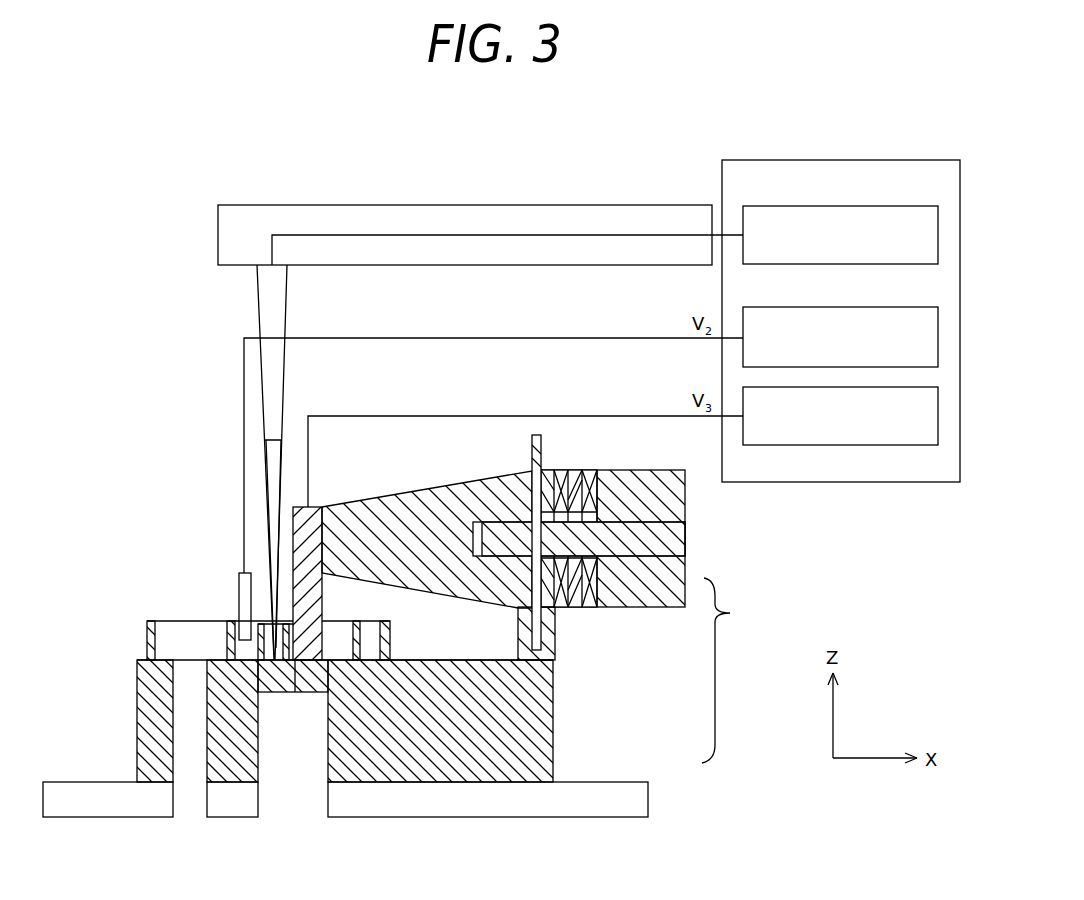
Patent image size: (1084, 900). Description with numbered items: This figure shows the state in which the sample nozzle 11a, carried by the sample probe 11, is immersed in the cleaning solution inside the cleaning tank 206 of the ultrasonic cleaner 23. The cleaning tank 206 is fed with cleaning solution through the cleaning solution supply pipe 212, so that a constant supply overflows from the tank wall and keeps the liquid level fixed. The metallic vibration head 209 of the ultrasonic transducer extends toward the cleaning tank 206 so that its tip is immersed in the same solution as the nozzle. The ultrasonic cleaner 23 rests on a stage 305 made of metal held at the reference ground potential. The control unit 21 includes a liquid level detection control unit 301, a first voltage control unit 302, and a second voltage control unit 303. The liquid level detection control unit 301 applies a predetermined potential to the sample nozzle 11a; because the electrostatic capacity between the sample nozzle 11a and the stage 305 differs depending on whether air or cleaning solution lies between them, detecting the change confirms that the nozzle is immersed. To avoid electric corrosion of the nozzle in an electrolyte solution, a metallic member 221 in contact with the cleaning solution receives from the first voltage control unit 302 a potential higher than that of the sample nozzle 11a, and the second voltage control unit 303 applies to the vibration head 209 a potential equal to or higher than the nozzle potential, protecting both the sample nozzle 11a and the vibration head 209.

The sample probe 11 is at (291, 205).
The sample nozzle 11a is at (272, 475).
The control unit 21 is at (888, 160).
The ultrasonic cleaner 23 is at (542, 599).
The cleaning tank 206 is at (333, 631).
The vibration head 209 is at (313, 520).
The cleaning solution supply pipe 212 is at (296, 765).
The metallic member 221 is at (237, 595).
The liquid level detection control unit 301 is at (868, 206).
The first voltage control unit 302 is at (868, 307).
The second voltage control unit 303 is at (878, 445).
The stage 305 is at (650, 797).